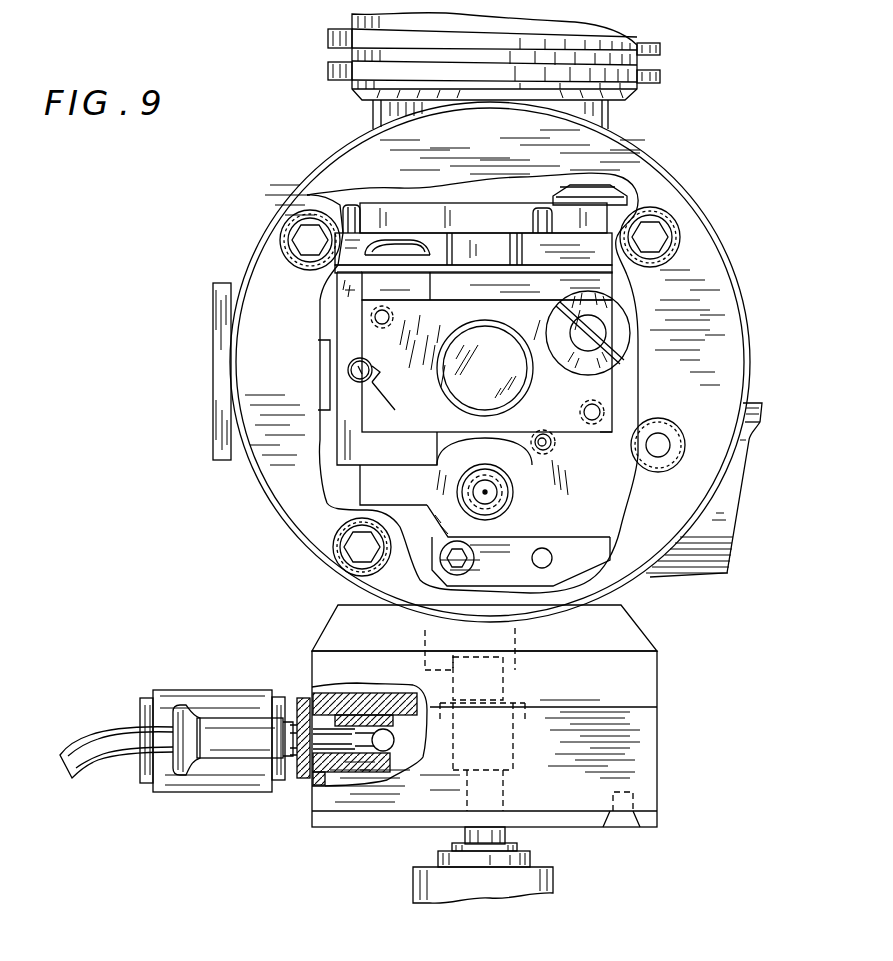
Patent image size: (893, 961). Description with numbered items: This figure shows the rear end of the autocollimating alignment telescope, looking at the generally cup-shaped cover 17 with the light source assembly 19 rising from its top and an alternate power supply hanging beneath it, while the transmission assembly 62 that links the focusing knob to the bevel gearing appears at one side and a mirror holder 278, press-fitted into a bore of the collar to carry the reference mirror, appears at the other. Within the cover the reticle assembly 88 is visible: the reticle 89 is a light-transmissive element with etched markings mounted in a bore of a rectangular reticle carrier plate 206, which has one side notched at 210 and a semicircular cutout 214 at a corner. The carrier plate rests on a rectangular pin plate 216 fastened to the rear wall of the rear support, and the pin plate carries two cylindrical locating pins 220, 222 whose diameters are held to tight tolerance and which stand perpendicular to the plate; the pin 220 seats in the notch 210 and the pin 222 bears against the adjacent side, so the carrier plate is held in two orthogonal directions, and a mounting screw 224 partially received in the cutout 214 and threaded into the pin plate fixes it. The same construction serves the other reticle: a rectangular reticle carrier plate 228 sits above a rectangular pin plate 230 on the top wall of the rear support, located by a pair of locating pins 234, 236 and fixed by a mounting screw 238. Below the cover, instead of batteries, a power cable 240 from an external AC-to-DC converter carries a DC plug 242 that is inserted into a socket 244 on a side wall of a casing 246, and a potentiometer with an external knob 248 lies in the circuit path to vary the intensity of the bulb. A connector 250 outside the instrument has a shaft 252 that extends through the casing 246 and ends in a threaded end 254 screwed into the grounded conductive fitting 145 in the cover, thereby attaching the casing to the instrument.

The cover 17 is at (707, 234).
The light source assembly 19 is at (662, 76).
The transmission assembly 62 is at (712, 544).
The reticle assembly 88 is at (625, 407).
The reticle 89 is at (514, 365).
The fitting 145 is at (540, 640).
The reticle carrier plate 206 is at (372, 416).
The notch 210 is at (378, 374).
The semicircular cutout 214 is at (550, 327).
The pin plate 216 is at (618, 457).
The locating pin 220 is at (349, 370).
The locating pin 222 is at (522, 443).
The mounting screw 224 is at (615, 330).
The reticle carrier plate 228 is at (375, 212).
The pin plate 230 is at (613, 260).
The locating pin 234 is at (345, 217).
The locating pin 236 is at (538, 205).
The mounting screw 238 is at (617, 190).
The power cable 240 is at (110, 740).
The DC plug 242 is at (345, 752).
The socket 244 is at (374, 752).
The casing 246 is at (645, 783).
The knob 248 is at (225, 672).
The connector 250 is at (555, 881).
The shaft 252 is at (503, 799).
The threaded end 254 is at (538, 681).
The mirror holder 278 is at (228, 283).